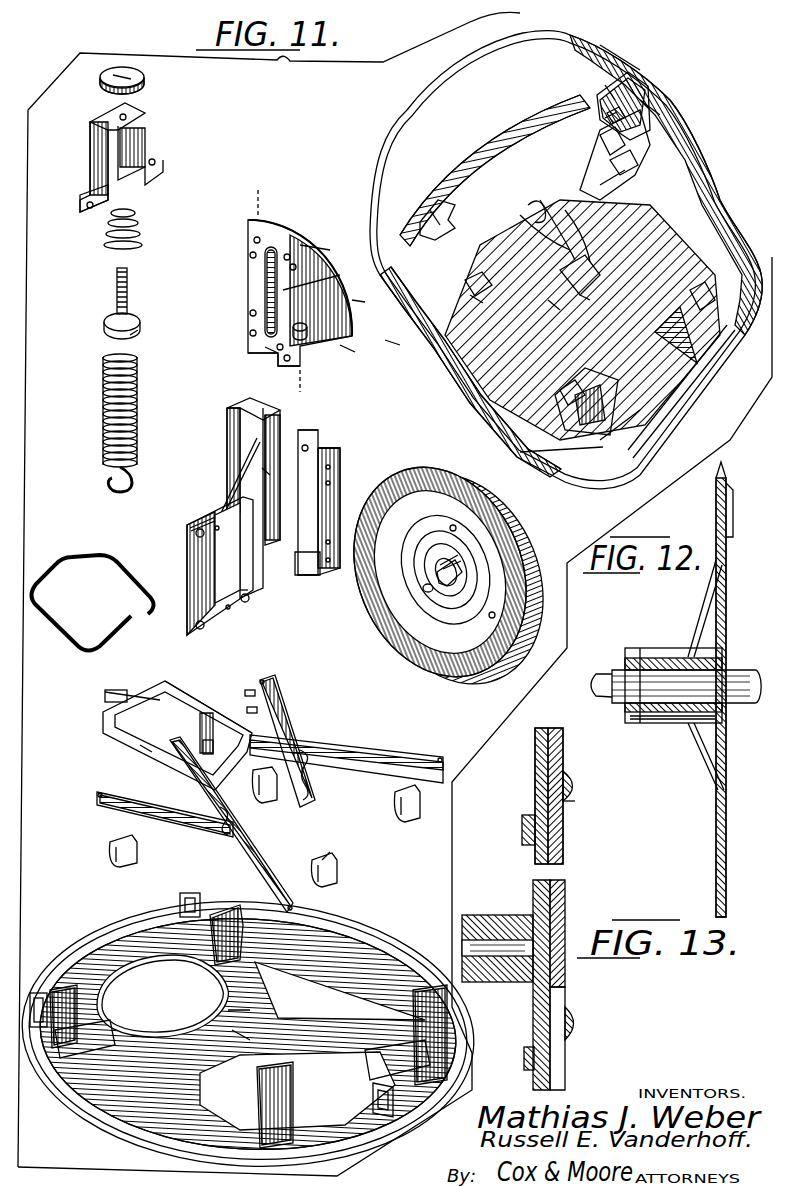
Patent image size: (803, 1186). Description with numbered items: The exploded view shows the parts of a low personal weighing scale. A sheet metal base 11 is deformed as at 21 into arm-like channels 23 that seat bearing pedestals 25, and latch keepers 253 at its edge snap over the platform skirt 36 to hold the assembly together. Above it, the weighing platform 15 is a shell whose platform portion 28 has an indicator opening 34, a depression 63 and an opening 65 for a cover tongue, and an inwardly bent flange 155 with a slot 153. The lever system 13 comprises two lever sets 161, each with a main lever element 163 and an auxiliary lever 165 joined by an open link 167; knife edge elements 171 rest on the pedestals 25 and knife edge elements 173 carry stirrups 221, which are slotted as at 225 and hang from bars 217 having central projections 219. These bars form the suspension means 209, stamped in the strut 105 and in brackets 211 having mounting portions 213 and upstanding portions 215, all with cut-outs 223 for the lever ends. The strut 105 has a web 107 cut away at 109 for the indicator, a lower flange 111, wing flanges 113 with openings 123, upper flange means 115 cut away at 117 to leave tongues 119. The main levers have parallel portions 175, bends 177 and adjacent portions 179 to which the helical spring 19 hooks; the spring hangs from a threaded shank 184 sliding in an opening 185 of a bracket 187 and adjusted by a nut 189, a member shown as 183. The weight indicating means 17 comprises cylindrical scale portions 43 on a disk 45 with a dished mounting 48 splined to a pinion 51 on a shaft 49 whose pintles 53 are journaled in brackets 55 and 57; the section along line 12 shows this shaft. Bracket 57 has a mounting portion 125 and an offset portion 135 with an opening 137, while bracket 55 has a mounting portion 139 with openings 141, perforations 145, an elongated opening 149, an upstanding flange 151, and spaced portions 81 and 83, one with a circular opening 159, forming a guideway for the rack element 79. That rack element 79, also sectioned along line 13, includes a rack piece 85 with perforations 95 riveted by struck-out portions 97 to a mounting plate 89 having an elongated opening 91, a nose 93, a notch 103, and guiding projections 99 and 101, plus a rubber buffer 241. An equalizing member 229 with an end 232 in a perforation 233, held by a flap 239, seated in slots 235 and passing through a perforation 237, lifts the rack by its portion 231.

In FIG. 11, the base 11 is at (359, 955).
In FIG. 11, the section line 12— 12 is at (452, 525).
In FIG. 11, the lever system 13 is at (303, 375).
In FIG. 11, the weighing platform 15 is at (380, 157).
In FIG. 11, the weight indicating means 17 is at (418, 444).
In FIG. 11, the helical spring 19 is at (108, 382).
In FIG. 11, the deformation 21 is at (272, 1000).
In FIG. 11, the arm-like channels 23 is at (332, 1040).
In FIG. 11, the bearing pedestals 25 is at (290, 1100).
In FIG. 11, the platform portion 28 is at (667, 215).
In FIG. 11, the indicator opening 34 is at (558, 312).
In FIG. 11, the side flanges 36 is at (478, 395).
In FIG. 11, the cylindrical scale carrying portions 43 is at (432, 668).
In FIG. 11, the disk 45 is at (440, 593).
In FIG. 12, the disk 45 is at (740, 780).
In FIG. 11, the dished mounting 48 is at (412, 610).
In FIG. 12, the dished mounting 48 is at (690, 750).
In FIG. 11, the shaft 49 is at (475, 528).
In FIG. 12, the shaft 49 is at (738, 680).
In FIG. 11, the pinion 51 is at (437, 572).
In FIG. 12, the pinion 51 is at (645, 660).
In FIG. 11, the pintles 53 is at (495, 540).
In FIG. 12, the pintles 53 is at (593, 672).
In FIG. 11, the bracket 55 is at (230, 460).
In FIG. 11, the indicator mounting bracket 57 is at (341, 462).
In FIG. 11, the depression 63 is at (592, 270).
In FIG. 11, the opening 65 is at (588, 302).
In FIG. 11, the rack element 79 is at (245, 300).
In FIG. 11, the bracket portion 81 is at (282, 366).
In FIG. 11, the bracket portion 83 is at (250, 362).
In FIG. 11, the rack piece 85 is at (275, 228).
In FIG. 13, the rack piece 85 is at (563, 748).
In FIG. 11, the mounting plate 89 is at (324, 252).
In FIG. 11, the elongated opening 91 is at (321, 279).
In FIG. 11, the nose 93 is at (356, 352).
In FIG. 13, the perforations 95 is at (565, 806).
In FIG. 11, the struck-out portions 97 is at (271, 292).
In FIG. 13, the struck-out portions 97 is at (573, 784).
In FIG. 11, the struck-out portions 99 is at (250, 352).
In FIG. 13, the struck-out portions 99 is at (575, 1022).
In FIG. 11, the struck-out portions 101 is at (340, 368).
In FIG. 13, the struck-out portions 101 is at (524, 1050).
In FIG. 11, the notch 103 is at (262, 350).
In FIG. 11, the strut 105 is at (630, 62).
In FIG. 11, the web 107 is at (500, 205).
In FIG. 11, the cut-away 109 is at (585, 240).
In FIG. 11, the flange 111 is at (530, 120).
In FIG. 11, the wing flanges 113 is at (617, 117).
In FIG. 11, the flange means 115 is at (483, 303).
In FIG. 11, the cut-away 117 is at (490, 285).
In FIG. 11, the upstanding tongues 119 is at (640, 245).
In FIG. 11, the openings 123 is at (680, 68).
In FIG. 11, the mounting portion 125 is at (325, 572).
In FIG. 11, the offset portion 135 is at (310, 440).
In FIG. 11, the opening 137 is at (322, 450).
In FIG. 11, the mounting portion 139 is at (200, 568).
In FIG. 11, the openings 141 is at (205, 630).
In FIG. 11, the perforations 145 is at (230, 612).
In FIG. 11, the elongated opening 149 is at (238, 583).
In FIG. 11, the upstanding flange 151 is at (235, 445).
In FIG. 11, the slot 153 is at (540, 212).
In FIG. 11, the inwardly bent flange 155 is at (547, 245).
In FIG. 11, the circular opening 159 is at (287, 484).
In FIG. 11, the lever sets 161 is at (199, 850).
In FIG. 11, the main lever element 163 is at (175, 800).
In FIG. 11, the auxiliary lever 165 is at (130, 826).
In FIG. 11, the open link 167 is at (262, 833).
In FIG. 11, the knife edge element 171 is at (100, 795).
In FIG. 11, the knife edge element 173 is at (105, 800).
In FIG. 11, the lever portions 175 is at (110, 742).
In FIG. 11, the bent portion 177 is at (165, 685).
In FIG. 11, the adjacent portions 179 is at (118, 690).
In FIG. 11, the screw base 183 is at (138, 318).
In FIG. 11, the threaded shank 184 is at (117, 282).
In FIG. 11, the opening 185 is at (132, 110).
In FIG. 11, the bracket 187 is at (98, 152).
In FIG. 11, the adjusting nut 189 is at (145, 79).
In FIG. 11, the suspension means 209 is at (615, 350).
In FIG. 11, the brackets 211 is at (612, 408).
In FIG. 11, the mounting portion 213 is at (668, 325).
In FIG. 11, the upstanding portions 215 is at (565, 398).
In FIG. 11, the bars 217 is at (560, 392).
In FIG. 11, the central projection 219 is at (568, 395).
In FIG. 11, the stirrups 221 is at (108, 855).
In FIG. 11, the cut-outs 223 is at (520, 452).
In FIG. 11, the slot 225 is at (327, 855).
In FIG. 11, the equalizing member 229 is at (73, 556).
In FIG. 11, the rack engaging portion 231 is at (128, 617).
In FIG. 11, the wire end 232 is at (149, 623).
In FIG. 11, the perforation 233 is at (203, 745).
In FIG. 11, the aligned slots 235 is at (99, 692).
In FIG. 11, the perforation 237 is at (148, 752).
In FIG. 11, the holding flap 239 is at (222, 744).
In FIG. 11, the rubber buffer 241 is at (396, 356).
In FIG. 13, the rubber buffer 241 is at (493, 915).
In FIG. 11, the latch keepers 253 is at (430, 1150).